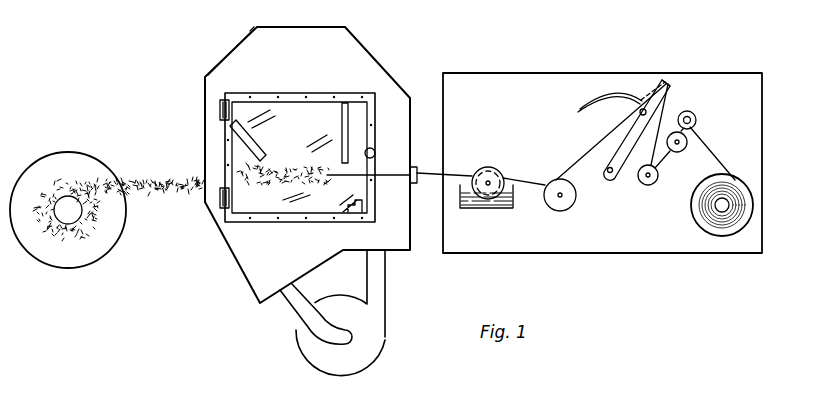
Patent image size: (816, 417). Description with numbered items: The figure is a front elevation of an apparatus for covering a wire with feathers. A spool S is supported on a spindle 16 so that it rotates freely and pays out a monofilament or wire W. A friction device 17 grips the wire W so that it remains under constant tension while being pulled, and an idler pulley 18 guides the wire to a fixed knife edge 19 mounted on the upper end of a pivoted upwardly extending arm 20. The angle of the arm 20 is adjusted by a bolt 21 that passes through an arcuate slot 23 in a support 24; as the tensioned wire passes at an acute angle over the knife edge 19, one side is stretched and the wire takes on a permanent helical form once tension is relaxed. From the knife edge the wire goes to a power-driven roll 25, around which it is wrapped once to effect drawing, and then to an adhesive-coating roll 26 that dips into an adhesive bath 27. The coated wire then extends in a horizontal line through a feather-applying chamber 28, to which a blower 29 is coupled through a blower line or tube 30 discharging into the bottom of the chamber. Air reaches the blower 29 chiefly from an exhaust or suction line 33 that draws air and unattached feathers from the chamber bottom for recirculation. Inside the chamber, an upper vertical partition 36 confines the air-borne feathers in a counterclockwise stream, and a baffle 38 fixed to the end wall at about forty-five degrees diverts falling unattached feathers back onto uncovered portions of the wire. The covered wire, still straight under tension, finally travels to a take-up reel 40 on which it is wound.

The take-up reel 40 is at (89, 256).
The feather-applying chamber 28 is at (240, 240).
The baffle 38 is at (255, 150).
The upper vertical partition 36 is at (340, 148).
The blower line or tube 30 is at (380, 275).
The blower 29 is at (358, 372).
The exhaust or suction line 33 is at (288, 302).
The support 24 is at (558, 248).
The adhesive-coating roll 26 is at (492, 170).
The adhesive bath 27 is at (478, 212).
The power-driven roll 25 is at (566, 208).
The arcuate slot 23 is at (590, 112).
The pivoted upwardly extending arm 20 is at (612, 150).
The fixed knife edge 19 is at (672, 83).
The bolt 21 is at (648, 111).
The friction device 17 is at (684, 148).
The idler pulley 18 is at (645, 186).
The wire W is at (710, 144).
The spindle 16 is at (705, 212).
The spool S is at (722, 230).